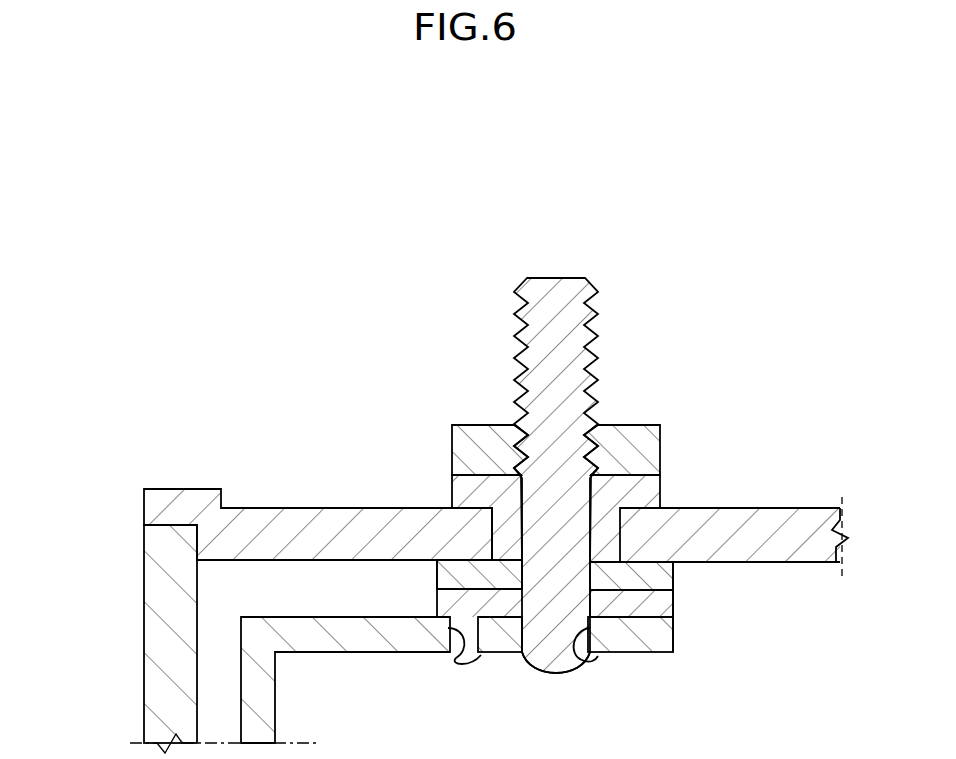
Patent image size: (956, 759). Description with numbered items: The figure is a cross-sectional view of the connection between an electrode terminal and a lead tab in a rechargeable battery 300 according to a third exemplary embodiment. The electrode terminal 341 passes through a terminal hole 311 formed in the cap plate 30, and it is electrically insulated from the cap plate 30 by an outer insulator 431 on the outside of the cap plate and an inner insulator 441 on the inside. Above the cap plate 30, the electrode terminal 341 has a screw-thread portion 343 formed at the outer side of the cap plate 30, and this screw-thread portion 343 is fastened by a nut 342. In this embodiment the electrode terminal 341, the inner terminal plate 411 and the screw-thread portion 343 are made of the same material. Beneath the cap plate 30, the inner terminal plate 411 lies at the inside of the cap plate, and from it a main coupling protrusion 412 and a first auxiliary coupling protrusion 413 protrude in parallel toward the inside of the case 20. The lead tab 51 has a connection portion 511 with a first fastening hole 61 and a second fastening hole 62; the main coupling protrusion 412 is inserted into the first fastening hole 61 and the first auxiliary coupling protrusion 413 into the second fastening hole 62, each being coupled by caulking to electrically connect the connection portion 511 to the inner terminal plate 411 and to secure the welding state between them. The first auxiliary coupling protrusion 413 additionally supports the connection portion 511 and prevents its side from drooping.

The rechargeable battery 300 is at (397, 128).
The screw-thread portion 343 is at (552, 302).
The nut 342 is at (473, 440).
The electrode terminal 341 is at (566, 513).
The terminal hole 311 is at (493, 540).
The outer insulator 431 is at (647, 492).
The cap plate 30 is at (160, 508).
The lead tab 51 is at (210, 626).
The case 20 is at (163, 693).
The inner insulator 441 is at (437, 577).
The inner terminal plate 411 is at (657, 598).
The first auxiliary coupling protrusion 413 is at (470, 660).
The main coupling protrusion 412 is at (553, 665).
The second fastening hole 62 is at (450, 664).
The first fastening hole 61 is at (585, 662).
The connection portion 511 is at (658, 640).